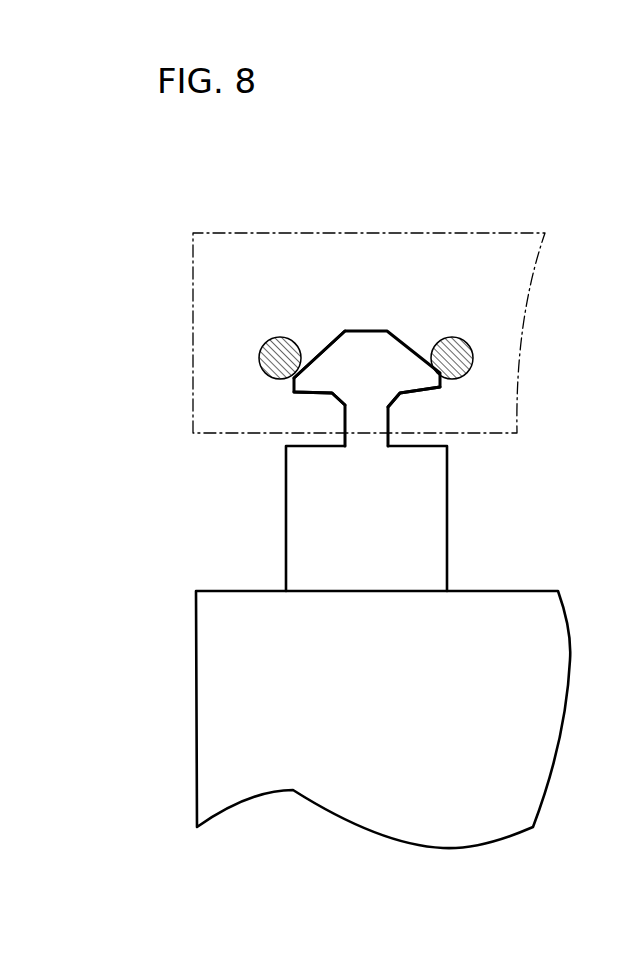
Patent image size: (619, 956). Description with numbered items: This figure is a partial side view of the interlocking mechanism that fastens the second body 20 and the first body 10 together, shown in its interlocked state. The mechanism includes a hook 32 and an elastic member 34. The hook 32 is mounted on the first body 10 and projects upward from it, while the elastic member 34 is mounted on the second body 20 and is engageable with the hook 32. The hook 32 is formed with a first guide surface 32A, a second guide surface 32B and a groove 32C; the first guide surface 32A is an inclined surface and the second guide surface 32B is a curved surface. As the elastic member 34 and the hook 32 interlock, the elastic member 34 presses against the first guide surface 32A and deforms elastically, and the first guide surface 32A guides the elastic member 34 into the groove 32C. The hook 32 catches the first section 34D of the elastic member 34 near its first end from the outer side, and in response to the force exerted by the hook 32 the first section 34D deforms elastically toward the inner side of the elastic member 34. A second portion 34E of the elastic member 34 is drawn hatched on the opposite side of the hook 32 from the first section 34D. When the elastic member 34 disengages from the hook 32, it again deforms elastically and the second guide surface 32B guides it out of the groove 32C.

The first body 10 is at (200, 695).
The second body 20 is at (190, 347).
The hook 32 is at (398, 370).
The first guide surface 32A is at (332, 345).
The second guide surface 32B is at (317, 395).
The groove 32C is at (412, 412).
The elastic member 34 is at (364, 350).
The first section 34D is at (258, 358).
The right wire section 34E is at (474, 363).